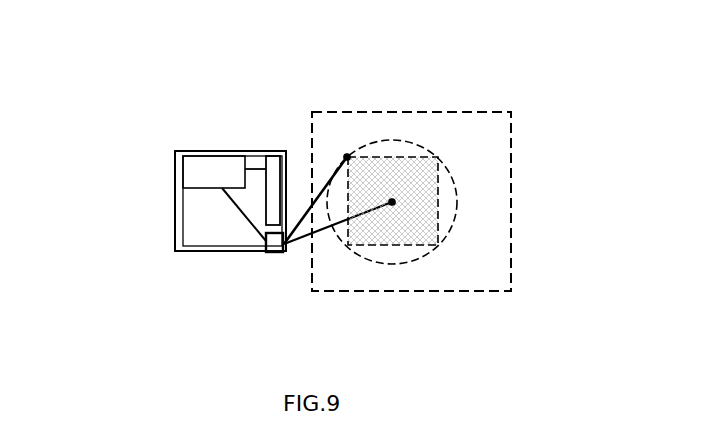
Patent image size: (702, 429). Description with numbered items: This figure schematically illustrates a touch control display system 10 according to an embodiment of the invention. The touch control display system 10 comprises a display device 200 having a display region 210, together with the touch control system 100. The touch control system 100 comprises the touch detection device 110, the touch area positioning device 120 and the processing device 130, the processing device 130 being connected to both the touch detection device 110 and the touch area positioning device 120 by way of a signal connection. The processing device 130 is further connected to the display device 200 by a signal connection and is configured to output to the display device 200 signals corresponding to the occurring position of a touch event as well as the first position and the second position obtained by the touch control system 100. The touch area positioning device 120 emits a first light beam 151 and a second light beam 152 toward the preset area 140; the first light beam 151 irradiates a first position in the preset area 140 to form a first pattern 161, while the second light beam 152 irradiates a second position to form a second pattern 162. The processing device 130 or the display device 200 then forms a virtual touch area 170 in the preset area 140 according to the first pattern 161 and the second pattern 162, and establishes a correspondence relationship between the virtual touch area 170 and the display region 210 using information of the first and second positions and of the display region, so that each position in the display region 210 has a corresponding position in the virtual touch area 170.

The touch control display system 10 is at (548, 32).
The touch control system 100 is at (338, 79).
The touch detection device 110 is at (274, 162).
The touch area positioning device 120 is at (284, 240).
The processing device 130 is at (207, 163).
The preset area 140 is at (490, 268).
The first light beam 151 is at (285, 245).
The second light beam 152 is at (311, 208).
The first pattern 161 is at (394, 201).
The second pattern 162 is at (349, 156).
The virtual touch area 170 is at (396, 231).
The display device 200 is at (207, 251).
The display region 210 is at (179, 251).